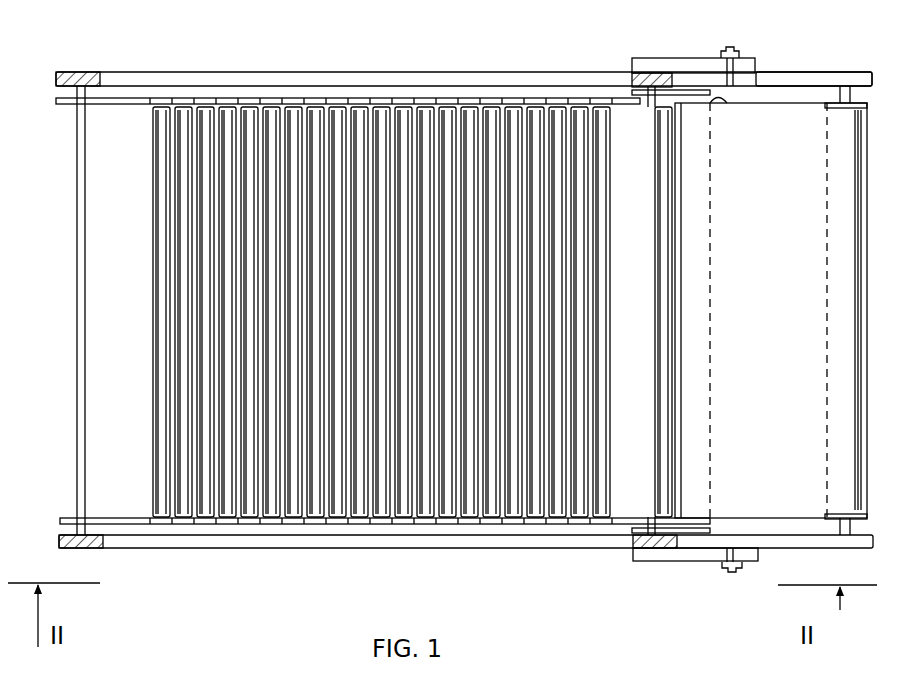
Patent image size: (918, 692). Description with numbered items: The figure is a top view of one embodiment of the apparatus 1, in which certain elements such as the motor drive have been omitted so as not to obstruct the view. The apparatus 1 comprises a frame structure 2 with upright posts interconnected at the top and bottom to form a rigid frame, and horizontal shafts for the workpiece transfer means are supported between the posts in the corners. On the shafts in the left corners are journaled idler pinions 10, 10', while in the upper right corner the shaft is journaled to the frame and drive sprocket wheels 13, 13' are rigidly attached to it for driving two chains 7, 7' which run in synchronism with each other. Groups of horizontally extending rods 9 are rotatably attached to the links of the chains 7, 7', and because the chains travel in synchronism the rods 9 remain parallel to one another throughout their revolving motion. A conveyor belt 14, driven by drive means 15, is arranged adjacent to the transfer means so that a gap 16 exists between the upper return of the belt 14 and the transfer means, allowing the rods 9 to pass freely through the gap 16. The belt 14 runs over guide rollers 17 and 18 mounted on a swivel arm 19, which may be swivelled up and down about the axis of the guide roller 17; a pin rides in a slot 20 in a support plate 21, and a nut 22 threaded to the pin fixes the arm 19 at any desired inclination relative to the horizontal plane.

The apparatus 1 is at (218, 60).
The frame structure 2 is at (84, 72).
The drive chain 7 is at (366, 523).
The drive chain 7' is at (331, 95).
The horizontally extending rods 9 is at (293, 118).
The idler pinion 10 is at (366, 496).
The idler pinion 10' is at (331, 131).
The drive sprocket wheel 13 is at (634, 495).
The drive sprocket wheel 13' is at (633, 125).
The conveyor belt 14 is at (780, 321).
The drive means 15 is at (630, 90).
The gap 16 is at (623, 425).
The guide roller 17 is at (722, 103).
The guide roller 18 is at (822, 90).
The swivel arm 19 is at (776, 72).
The slot 20 is at (725, 62).
The support plate 21 is at (686, 58).
The nut 22 is at (740, 58).